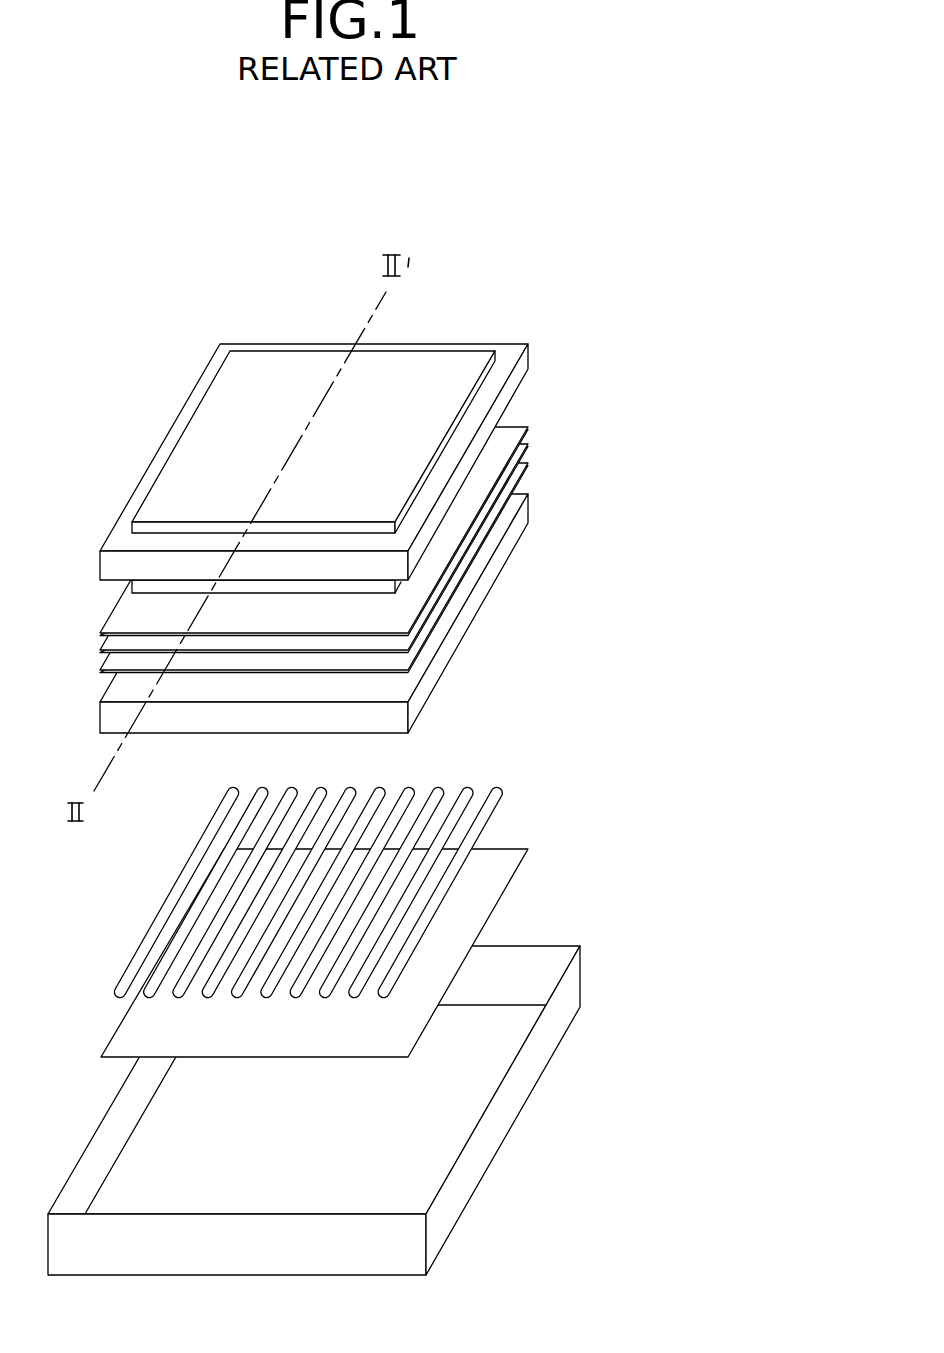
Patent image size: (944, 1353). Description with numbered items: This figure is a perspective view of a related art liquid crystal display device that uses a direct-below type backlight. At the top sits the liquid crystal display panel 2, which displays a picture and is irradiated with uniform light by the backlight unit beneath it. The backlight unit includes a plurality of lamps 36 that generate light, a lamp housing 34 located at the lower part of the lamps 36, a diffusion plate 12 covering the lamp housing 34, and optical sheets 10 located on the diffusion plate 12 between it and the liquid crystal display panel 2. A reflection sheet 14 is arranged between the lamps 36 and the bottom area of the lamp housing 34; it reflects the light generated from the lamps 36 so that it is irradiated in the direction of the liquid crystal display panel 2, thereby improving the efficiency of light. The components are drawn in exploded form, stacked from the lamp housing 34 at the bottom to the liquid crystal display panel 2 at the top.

The liquid crystal display panel 2 is at (518, 372).
The optical sheets 10 is at (542, 418).
The diffusion plate 12 is at (456, 637).
The reflection sheet 14 is at (505, 870).
The lamp housing 34 is at (570, 988).
The lamps 36 is at (500, 792).